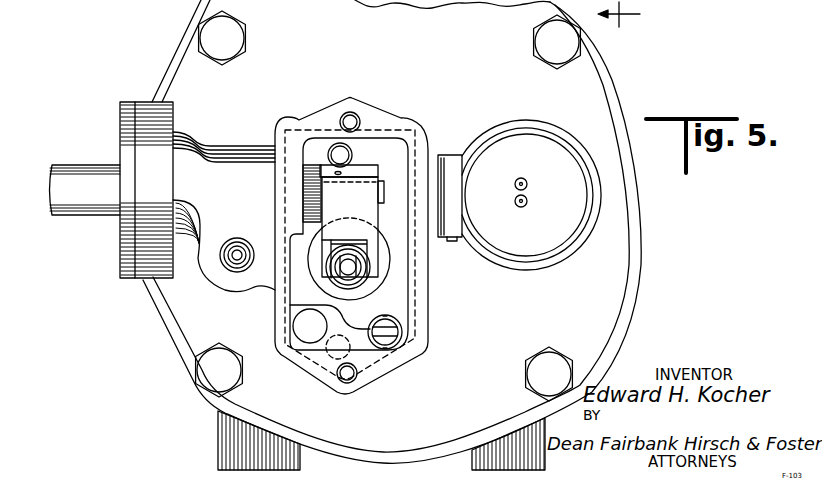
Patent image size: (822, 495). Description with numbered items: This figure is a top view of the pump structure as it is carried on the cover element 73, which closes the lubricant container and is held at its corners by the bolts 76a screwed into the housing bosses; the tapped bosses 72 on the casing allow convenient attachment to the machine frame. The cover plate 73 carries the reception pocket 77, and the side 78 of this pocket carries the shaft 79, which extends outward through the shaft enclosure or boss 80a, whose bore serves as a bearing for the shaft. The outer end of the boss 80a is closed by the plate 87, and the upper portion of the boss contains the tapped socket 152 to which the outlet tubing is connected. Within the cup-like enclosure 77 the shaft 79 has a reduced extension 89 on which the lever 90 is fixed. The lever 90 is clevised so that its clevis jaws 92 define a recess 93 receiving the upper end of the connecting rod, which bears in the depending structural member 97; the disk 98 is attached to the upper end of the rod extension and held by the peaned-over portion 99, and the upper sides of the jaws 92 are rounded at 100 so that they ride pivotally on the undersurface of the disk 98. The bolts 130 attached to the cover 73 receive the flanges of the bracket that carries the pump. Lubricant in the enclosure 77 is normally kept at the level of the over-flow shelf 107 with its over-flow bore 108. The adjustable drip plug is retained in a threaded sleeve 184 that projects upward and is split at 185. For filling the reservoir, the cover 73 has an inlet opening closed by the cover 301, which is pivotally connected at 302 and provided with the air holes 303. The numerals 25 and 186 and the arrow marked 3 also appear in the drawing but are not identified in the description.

The housing flange 25 is at (645, 262).
The cover element 73 is at (590, 312).
The tapped boss 72 is at (226, 444).
The bolts 76a is at (240, 36).
The plate 87 is at (124, 117).
The shaft 79 is at (83, 204).
The shaft enclosure 80a is at (213, 175).
The tapped socket 152 is at (224, 268).
The reception pocket 77 is at (378, 137).
The bolts 130 is at (335, 150).
The side of pocket 78 is at (302, 178).
The lever 90 is at (367, 208).
The reduced extension 89 is at (385, 185).
The clevis jaws 92 is at (318, 248).
The disk 98 is at (367, 283).
The peaned-over portion 99 is at (349, 275).
The recess 93 is at (370, 241).
The depending structural member 97 is at (383, 267).
The rounded upper sides 100 is at (330, 248).
The over-flow bore 108 is at (296, 325).
The over-flow shelf 107 is at (328, 338).
The threaded sleeve 184 is at (402, 333).
The split 185 is at (397, 318).
The disc slot 186 is at (390, 335).
The pivotal connection 302 is at (479, 126).
The cover 301 is at (553, 150).
The air holes 303 is at (530, 186).
The section line 3 is at (629, 17).